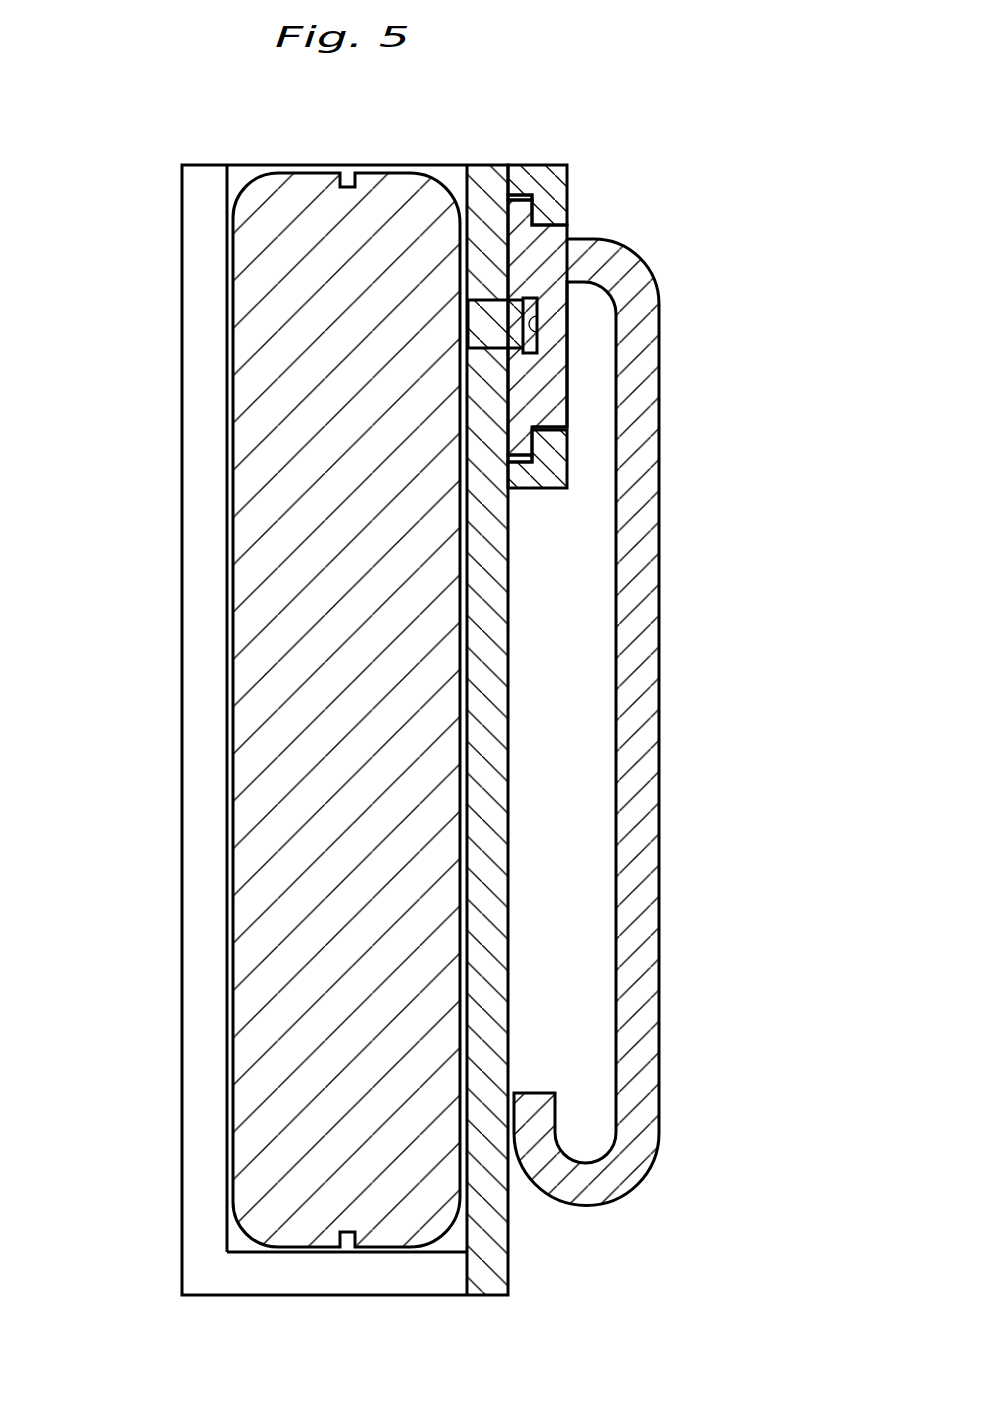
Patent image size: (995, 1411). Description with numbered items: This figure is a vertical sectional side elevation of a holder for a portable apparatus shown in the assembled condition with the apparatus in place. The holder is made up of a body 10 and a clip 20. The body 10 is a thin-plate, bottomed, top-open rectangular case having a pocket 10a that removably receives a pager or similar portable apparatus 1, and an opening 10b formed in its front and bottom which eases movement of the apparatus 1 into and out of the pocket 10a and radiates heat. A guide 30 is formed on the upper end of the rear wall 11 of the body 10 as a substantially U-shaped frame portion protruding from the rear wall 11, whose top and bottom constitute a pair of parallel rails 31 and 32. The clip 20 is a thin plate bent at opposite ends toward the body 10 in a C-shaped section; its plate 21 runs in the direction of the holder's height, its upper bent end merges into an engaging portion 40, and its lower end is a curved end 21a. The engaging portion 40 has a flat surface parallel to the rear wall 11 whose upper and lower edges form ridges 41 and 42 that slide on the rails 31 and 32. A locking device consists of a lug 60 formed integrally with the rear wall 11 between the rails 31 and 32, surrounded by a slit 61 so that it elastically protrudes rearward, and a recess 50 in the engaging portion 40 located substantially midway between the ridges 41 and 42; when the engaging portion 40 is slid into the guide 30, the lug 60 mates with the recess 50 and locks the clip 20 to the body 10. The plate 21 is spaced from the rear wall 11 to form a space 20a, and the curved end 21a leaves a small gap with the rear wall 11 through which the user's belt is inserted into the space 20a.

The portable apparatus 1 is at (405, 195).
The body 10 is at (143, 701).
The pocket 10a is at (236, 1240).
The opening 10b is at (202, 1018).
The rear wall 11 is at (495, 850).
The clip 20 is at (695, 612).
The space 20a is at (583, 782).
The plate 21 is at (650, 668).
The curved end 21a is at (590, 1195).
The guide 30 is at (621, 278).
The rail 31 is at (569, 191).
The rail 32 is at (569, 452).
The engaging portion 40 is at (583, 405).
The ridge 41 is at (522, 210).
The ridge 42 is at (520, 460).
The recess 50 is at (535, 330).
The lug 60 is at (512, 341).
The slit 61 is at (473, 352).